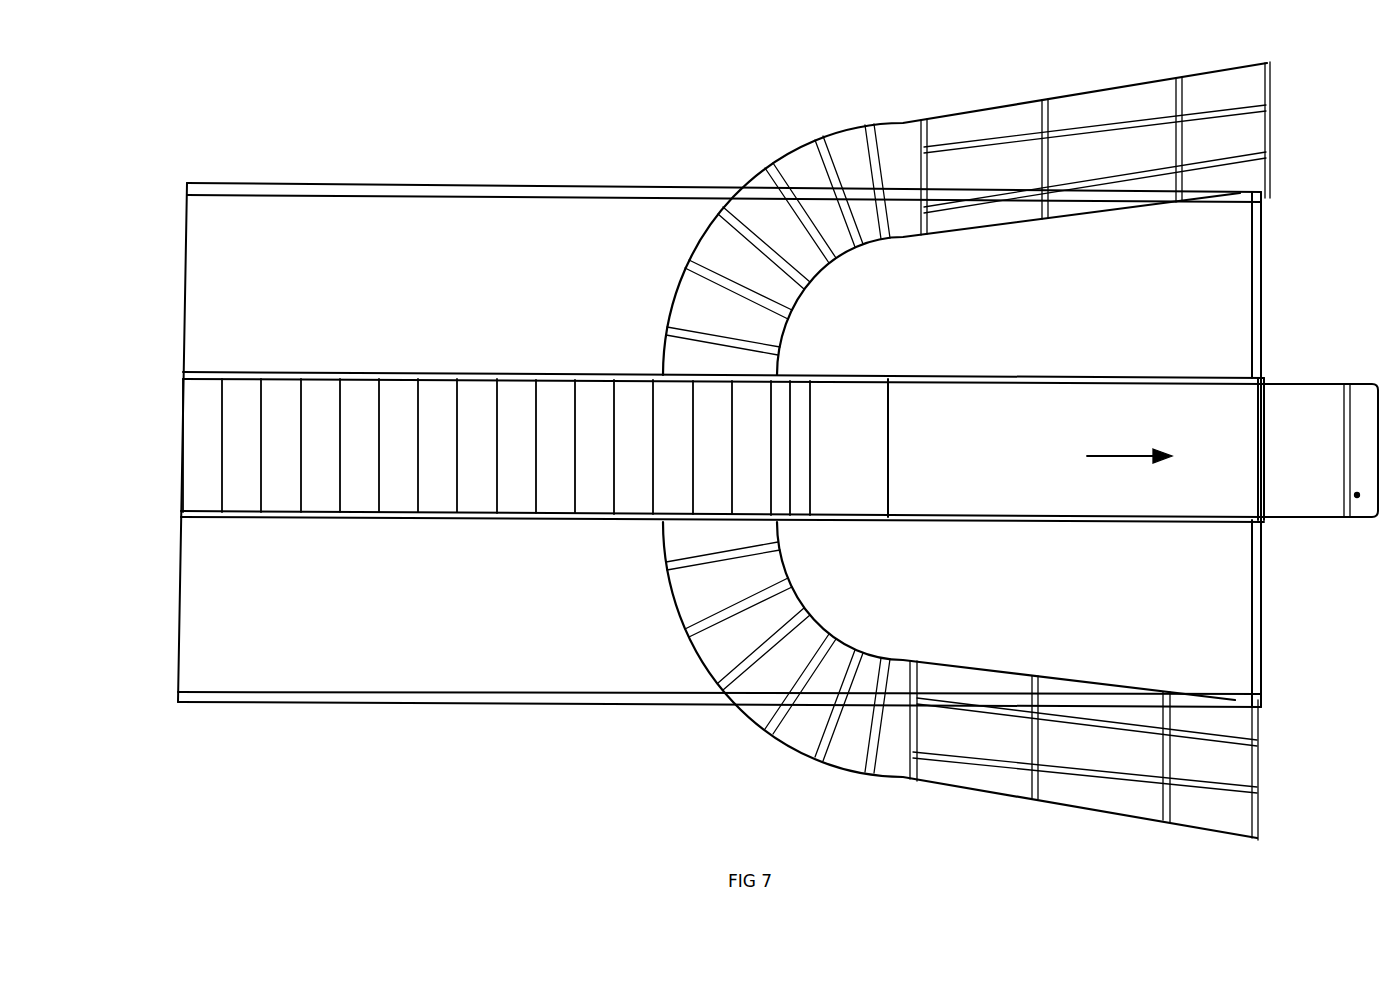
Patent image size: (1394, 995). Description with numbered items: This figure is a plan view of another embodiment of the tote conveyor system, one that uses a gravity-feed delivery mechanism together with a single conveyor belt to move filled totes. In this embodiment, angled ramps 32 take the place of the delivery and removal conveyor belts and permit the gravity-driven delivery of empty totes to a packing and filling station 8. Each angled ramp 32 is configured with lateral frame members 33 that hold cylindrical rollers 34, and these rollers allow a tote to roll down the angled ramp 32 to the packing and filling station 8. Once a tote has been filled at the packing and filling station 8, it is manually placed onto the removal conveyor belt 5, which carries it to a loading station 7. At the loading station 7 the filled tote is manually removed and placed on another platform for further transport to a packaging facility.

The removal conveyor belt 5 is at (1020, 432).
The loading station 7 is at (1300, 412).
The packing and filling station 8 is at (650, 527).
The angled ramps 32 is at (1015, 105).
The lateral frame members 33 is at (797, 148).
The cylindrical rollers 34 is at (828, 160).